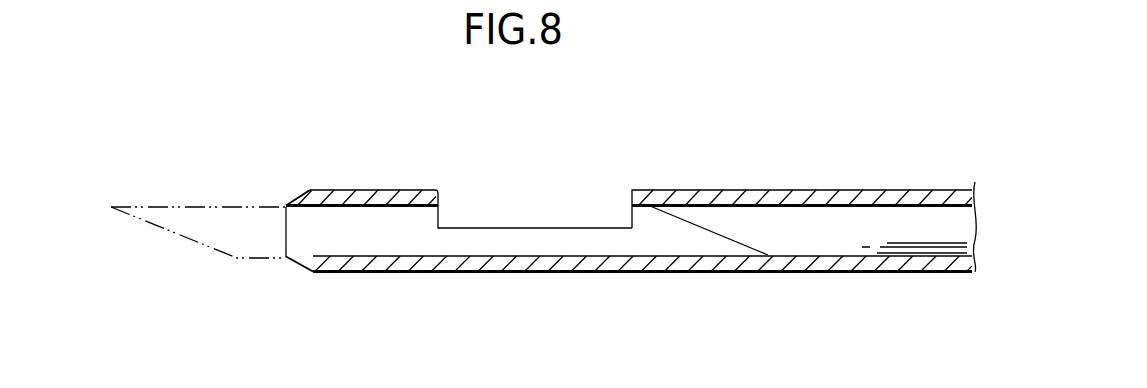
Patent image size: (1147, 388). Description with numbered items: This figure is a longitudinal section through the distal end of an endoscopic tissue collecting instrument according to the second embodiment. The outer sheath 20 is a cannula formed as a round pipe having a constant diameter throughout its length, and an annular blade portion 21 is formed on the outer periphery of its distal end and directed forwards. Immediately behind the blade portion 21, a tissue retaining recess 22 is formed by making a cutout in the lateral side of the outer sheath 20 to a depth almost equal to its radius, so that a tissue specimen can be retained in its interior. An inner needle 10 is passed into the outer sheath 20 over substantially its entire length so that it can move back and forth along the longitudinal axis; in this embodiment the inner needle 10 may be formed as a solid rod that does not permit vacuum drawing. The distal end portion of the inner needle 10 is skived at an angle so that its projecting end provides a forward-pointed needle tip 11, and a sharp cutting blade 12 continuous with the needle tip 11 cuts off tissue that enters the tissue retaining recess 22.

The inner needle 10 is at (644, 234).
The needle tip 11 is at (802, 181).
The cutting blade 12 is at (692, 210).
The outer sheath 20 is at (717, 260).
The blade portion 21 is at (287, 205).
The tissue retaining recess 22 is at (533, 212).